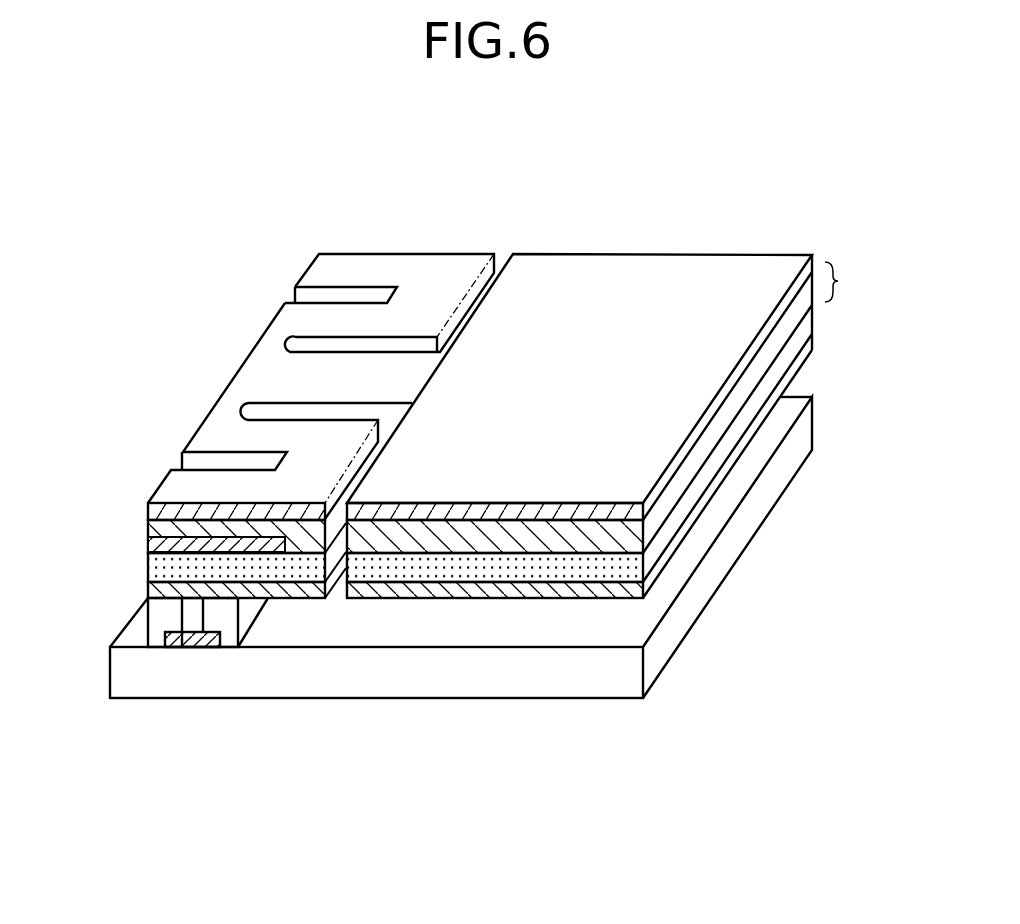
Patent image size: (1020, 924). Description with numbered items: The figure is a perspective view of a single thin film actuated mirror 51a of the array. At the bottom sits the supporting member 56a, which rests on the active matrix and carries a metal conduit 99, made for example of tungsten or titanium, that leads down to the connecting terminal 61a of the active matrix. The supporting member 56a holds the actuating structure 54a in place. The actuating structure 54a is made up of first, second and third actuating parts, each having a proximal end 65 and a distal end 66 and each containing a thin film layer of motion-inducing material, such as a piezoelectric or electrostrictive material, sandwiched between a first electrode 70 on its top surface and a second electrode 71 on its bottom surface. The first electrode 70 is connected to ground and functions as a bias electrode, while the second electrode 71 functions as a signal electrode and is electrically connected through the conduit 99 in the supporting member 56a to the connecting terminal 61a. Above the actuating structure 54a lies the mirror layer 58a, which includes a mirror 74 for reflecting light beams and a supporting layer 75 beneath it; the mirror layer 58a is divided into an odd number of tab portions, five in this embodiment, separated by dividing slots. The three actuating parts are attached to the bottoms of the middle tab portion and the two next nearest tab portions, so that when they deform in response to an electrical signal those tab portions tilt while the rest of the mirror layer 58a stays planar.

The thin film actuated mirror 51a is at (640, 206).
The mirror layer 58a is at (860, 282).
The mirror 74 is at (773, 327).
The proximal end 65 is at (148, 512).
The first electrode 70 is at (147, 526).
The actuating structure 54a is at (140, 527).
The conduit 99 is at (195, 615).
The supporting member 56a is at (162, 638).
The connecting terminal 61a is at (197, 652).
The second electrode 71 is at (283, 588).
The distal end 66 is at (330, 573).
The supporting layer 75 is at (592, 533).